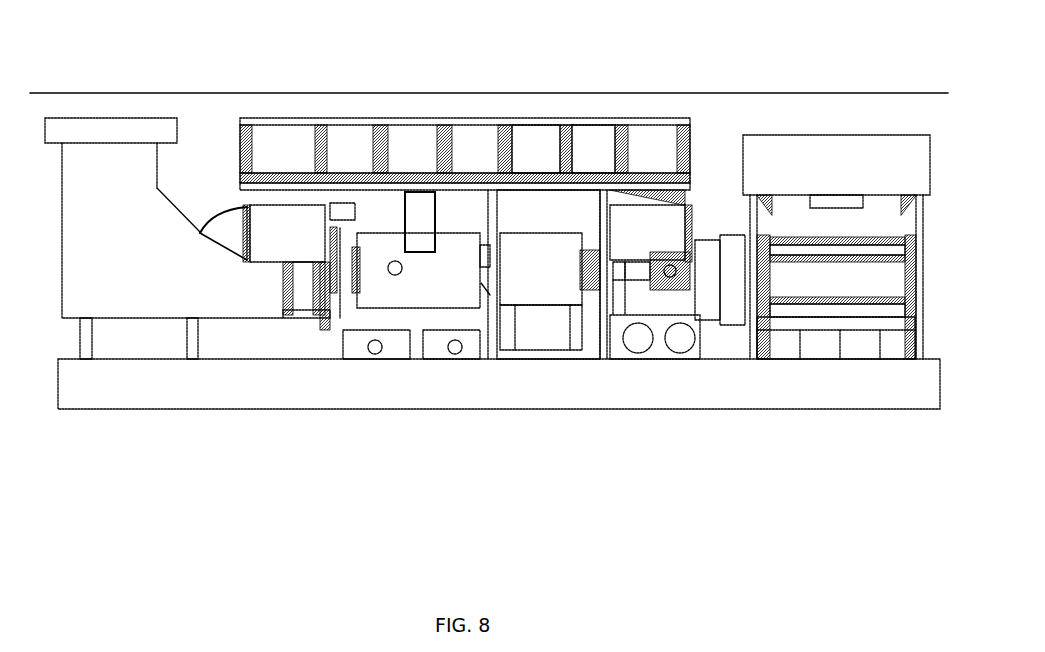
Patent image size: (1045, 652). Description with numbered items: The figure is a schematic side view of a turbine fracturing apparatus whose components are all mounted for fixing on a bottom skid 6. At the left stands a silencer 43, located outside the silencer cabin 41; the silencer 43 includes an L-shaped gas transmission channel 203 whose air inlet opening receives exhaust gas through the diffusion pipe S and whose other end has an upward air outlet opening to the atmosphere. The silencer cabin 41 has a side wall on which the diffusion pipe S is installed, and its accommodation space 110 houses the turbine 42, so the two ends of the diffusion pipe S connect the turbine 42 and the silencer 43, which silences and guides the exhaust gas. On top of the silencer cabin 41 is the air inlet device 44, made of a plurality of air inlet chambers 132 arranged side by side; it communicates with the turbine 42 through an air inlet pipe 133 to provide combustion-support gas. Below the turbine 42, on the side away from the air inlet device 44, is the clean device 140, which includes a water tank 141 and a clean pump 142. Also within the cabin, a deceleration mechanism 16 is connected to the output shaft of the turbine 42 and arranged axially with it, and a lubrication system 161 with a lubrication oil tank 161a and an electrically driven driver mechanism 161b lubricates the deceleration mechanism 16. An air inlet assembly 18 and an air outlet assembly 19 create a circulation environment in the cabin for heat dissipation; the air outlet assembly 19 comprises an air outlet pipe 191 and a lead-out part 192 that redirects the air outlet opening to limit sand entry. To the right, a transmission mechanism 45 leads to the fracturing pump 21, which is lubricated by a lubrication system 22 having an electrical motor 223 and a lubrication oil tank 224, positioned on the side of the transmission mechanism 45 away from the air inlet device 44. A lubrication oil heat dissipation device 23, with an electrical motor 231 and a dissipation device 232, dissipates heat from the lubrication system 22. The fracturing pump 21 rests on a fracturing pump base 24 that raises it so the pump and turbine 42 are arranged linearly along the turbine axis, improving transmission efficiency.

The bottom skid 6 is at (102, 382).
The silencer 43 is at (165, 308).
The gas transmission channel 203 is at (93, 165).
The air outlet assembly 19 is at (251, 161).
The air outlet pipe 191 is at (282, 228).
The lead-out part 192 is at (228, 215).
The air inlet device 44 is at (367, 137).
The air inlet chambers 132 is at (583, 128).
The air inlet pipe 133 is at (433, 208).
The accommodation space 110 is at (440, 222).
The diffusion pipe S is at (353, 253).
The silencer cabin 41 is at (330, 320).
The turbine 42 is at (419, 272).
The clean device 140 is at (341, 429).
The water tank 141 is at (348, 355).
The clean pump 142 is at (375, 353).
The lubrication system 161 is at (445, 429).
The lubrication oil tank 161a is at (432, 343).
The driver mechanism 161b is at (458, 353).
The deceleration mechanism 16 is at (543, 295).
The air inlet assembly 18 is at (647, 223).
The transmission mechanism 45 is at (625, 282).
The fracturing pump 21 is at (596, 262).
The lubrication system 22 is at (678, 410).
The electrical motor 223 is at (642, 345).
The lubrication oil tank 224 is at (700, 330).
The lubrication oil heat dissipation device 23 is at (828, 104).
The dissipation device 232 is at (757, 167).
The electrical motor 231 is at (843, 200).
The fracturing pump base 24 is at (843, 347).